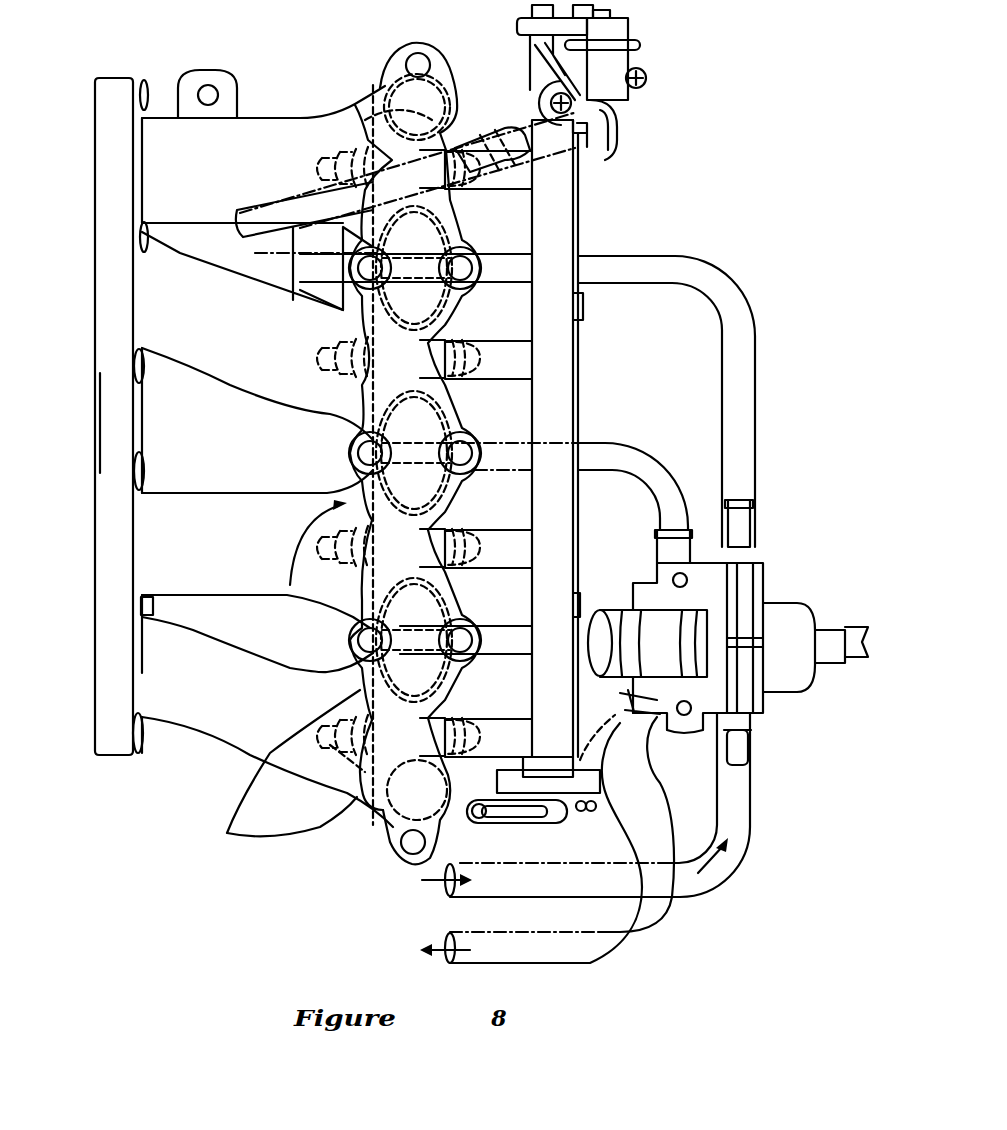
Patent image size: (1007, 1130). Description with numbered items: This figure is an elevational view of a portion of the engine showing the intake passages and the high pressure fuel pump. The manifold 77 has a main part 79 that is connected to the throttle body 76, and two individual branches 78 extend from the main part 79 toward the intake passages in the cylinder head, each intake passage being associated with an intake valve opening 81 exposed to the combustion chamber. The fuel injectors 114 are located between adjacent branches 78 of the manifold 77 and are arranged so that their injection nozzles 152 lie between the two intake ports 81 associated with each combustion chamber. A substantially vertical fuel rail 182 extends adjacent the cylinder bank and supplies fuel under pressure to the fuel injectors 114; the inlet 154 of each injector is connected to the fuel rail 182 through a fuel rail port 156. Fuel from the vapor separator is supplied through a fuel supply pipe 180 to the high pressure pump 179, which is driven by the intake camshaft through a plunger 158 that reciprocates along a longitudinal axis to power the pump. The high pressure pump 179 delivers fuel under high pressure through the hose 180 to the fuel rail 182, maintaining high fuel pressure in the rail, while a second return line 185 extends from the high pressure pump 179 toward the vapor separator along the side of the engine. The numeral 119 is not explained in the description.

The throttle body 76 is at (82, 416).
The manifold 77 is at (359, 420).
The branches 78 is at (339, 623).
The main part 79 is at (265, 132).
The intake valve opening 81 is at (455, 74).
The fuel injector 114 is at (361, 128).
The intake passage 119 is at (345, 775).
The injection nozzle 152 is at (327, 163).
The inlet 154 is at (485, 147).
The fuel rail port 156 is at (496, 352).
The plunger 158 is at (593, 607).
The high pressure pump 179 is at (778, 586).
The fuel supply pipe 180 is at (650, 456).
The fuel rail 182 is at (578, 420).
The second return line 185 is at (755, 418).